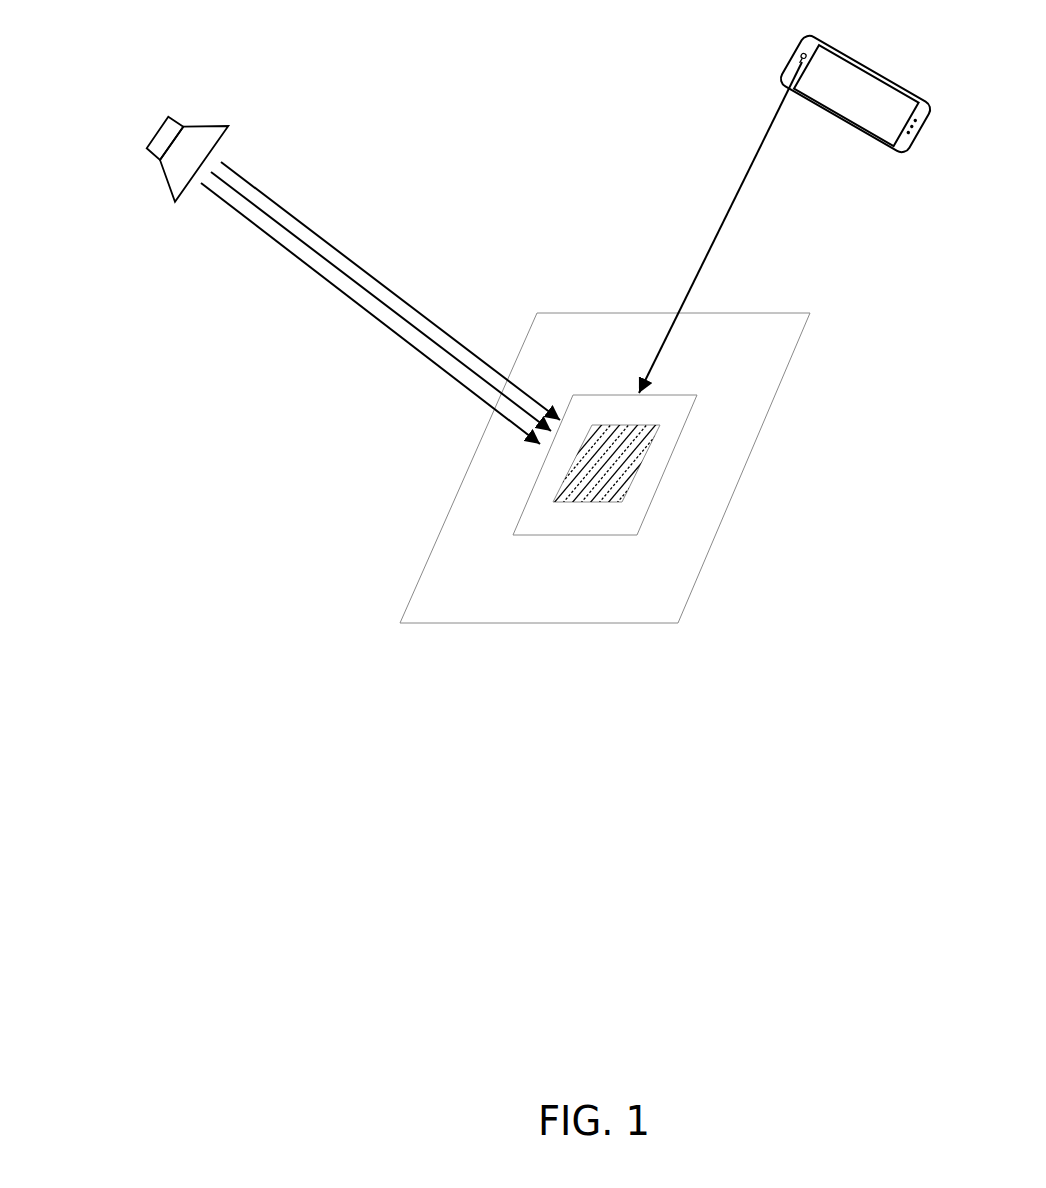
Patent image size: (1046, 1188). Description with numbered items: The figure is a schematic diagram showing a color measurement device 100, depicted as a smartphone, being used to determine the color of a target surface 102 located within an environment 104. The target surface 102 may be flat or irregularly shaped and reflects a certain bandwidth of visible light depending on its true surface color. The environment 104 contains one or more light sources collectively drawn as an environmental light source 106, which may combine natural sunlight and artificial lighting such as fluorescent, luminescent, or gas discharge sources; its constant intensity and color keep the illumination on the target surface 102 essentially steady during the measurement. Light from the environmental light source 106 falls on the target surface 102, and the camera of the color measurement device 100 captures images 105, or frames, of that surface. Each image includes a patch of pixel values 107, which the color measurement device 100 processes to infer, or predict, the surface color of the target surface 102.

The color measurement device 100 is at (879, 106).
The target surface 102 is at (582, 605).
The environment 104 is at (545, 111).
The images 105 is at (692, 423).
The environmental light source 106 is at (177, 108).
The patch of pixel values 107 is at (645, 472).